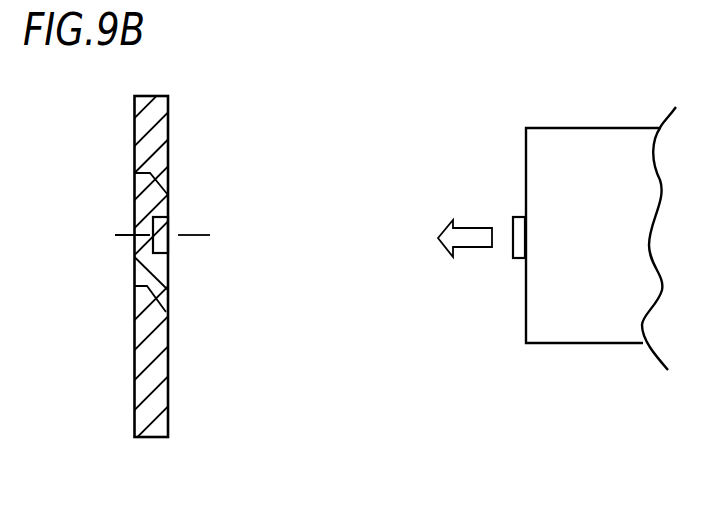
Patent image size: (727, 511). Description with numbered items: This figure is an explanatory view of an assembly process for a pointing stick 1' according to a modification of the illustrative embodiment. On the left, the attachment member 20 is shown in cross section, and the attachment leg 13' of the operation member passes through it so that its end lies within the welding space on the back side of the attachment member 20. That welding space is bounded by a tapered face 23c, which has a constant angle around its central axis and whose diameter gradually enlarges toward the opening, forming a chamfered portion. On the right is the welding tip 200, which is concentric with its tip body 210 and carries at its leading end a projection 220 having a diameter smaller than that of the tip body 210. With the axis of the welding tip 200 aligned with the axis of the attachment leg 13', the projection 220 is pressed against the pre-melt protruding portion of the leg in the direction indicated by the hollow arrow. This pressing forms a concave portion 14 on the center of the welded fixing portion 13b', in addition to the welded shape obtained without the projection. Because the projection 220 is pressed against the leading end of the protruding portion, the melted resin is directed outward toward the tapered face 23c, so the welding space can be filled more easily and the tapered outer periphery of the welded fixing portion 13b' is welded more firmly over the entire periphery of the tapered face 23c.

The attachment member 20 is at (168, 123).
The welded fixing portion 13b' is at (232, 145).
The attachment leg 13' is at (225, 178).
The concave portion 14 is at (162, 228).
The tapered face 23c is at (149, 290).
The pointing stick 1' is at (87, 450).
The welding tip 200 is at (572, 150).
The projection 220 is at (511, 214).
The tip body 210 is at (570, 322).